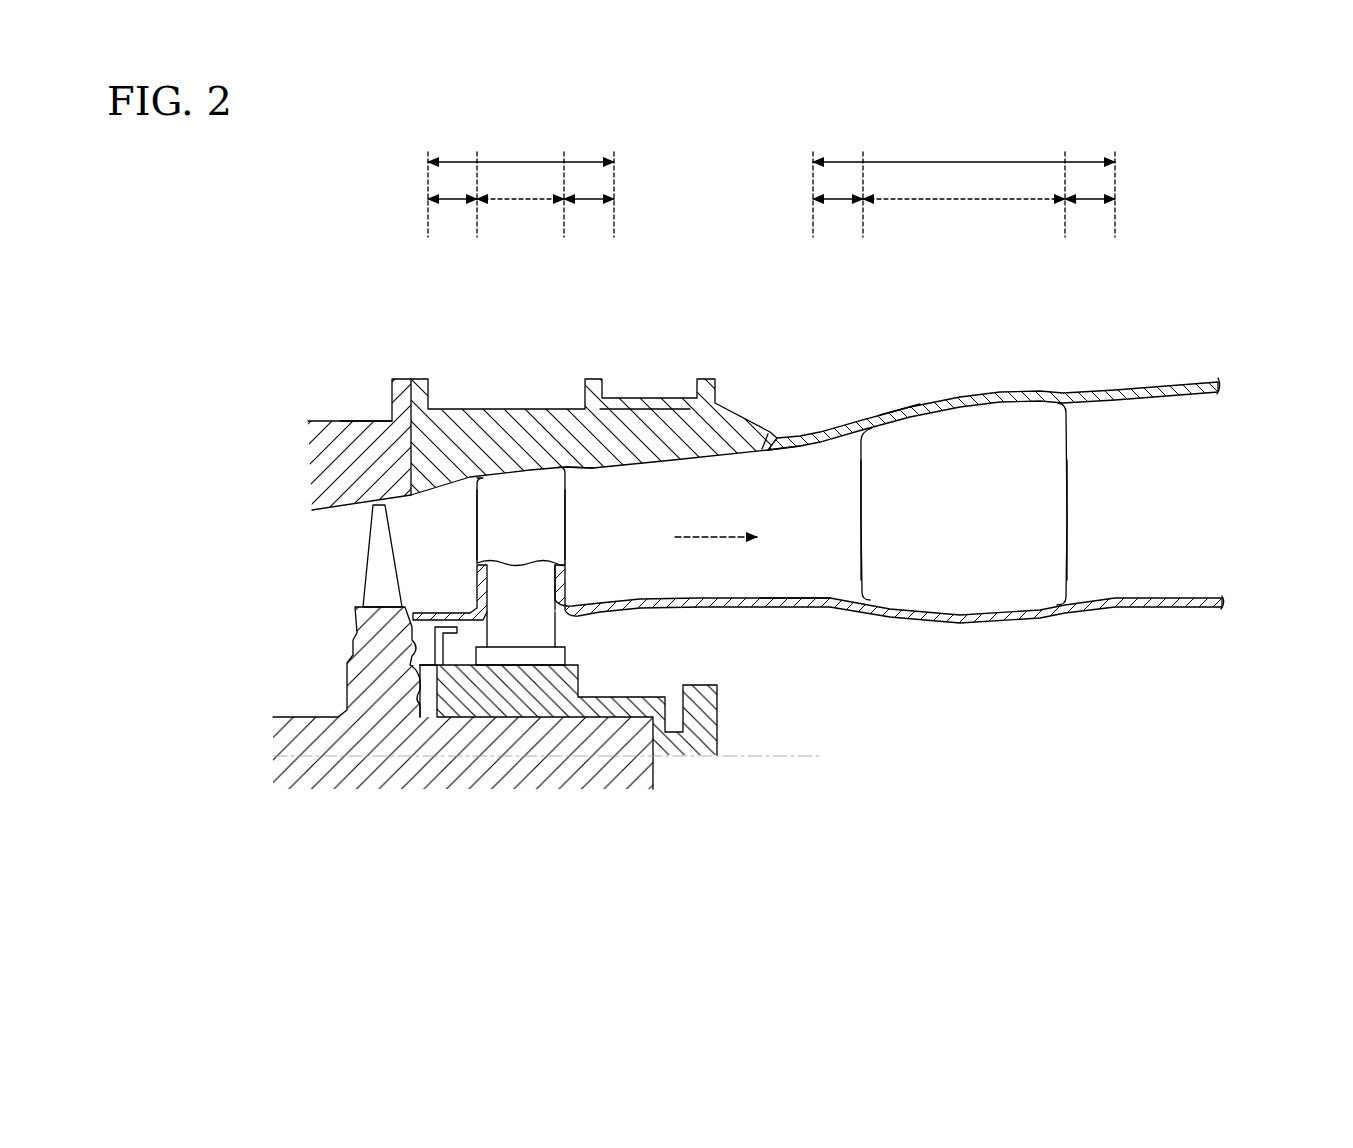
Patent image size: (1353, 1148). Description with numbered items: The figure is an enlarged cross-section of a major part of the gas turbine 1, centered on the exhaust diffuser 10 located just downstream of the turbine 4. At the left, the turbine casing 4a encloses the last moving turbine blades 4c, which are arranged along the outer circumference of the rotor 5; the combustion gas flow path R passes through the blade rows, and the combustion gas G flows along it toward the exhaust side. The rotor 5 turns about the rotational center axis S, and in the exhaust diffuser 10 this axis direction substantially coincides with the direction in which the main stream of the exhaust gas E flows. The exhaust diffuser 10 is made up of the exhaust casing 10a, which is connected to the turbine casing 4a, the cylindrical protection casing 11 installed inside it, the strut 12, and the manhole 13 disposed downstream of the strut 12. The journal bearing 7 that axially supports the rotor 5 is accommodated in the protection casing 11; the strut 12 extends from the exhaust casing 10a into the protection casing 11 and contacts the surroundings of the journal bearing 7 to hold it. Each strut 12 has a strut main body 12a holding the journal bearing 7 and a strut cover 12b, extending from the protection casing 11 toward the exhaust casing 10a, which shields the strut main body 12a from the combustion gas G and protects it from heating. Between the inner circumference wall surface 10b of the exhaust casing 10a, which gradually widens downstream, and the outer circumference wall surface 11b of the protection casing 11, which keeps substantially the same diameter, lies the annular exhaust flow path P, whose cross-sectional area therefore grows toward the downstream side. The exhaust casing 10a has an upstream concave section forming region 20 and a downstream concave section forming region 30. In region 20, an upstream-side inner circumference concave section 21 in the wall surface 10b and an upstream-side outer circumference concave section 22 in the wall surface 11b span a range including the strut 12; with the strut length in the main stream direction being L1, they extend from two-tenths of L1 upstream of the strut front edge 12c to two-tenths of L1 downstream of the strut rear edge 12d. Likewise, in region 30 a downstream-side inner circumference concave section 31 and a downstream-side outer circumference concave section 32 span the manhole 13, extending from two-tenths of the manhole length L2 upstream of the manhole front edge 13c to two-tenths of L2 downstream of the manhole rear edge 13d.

The gas turbine 1 is at (1252, 210).
The turbine 4 is at (320, 405).
The turbine casing 4a is at (362, 424).
The moving turbine blades 4c is at (372, 575).
The rotor 5 is at (300, 708).
The journal bearing 7 is at (535, 698).
The exhaust diffuser 10 is at (1042, 389).
The exhaust casing 10a is at (923, 406).
The inner circumference wall surface 10b is at (787, 449).
The protection casing 11 is at (1175, 597).
The outer circumference wall surface 11b is at (790, 598).
The strut 12 is at (520, 535).
The strut main body 12a is at (543, 630).
The strut cover 12b is at (548, 545).
The strut front edge 12c is at (477, 528).
The strut rear edge 12d is at (565, 560).
The manhole 13 is at (985, 448).
The manhole front edge 13c is at (861, 526).
The manhole rear edge 13d is at (1068, 505).
The upstream concave section forming region 20 is at (518, 162).
The upstream-side inner circumference concave section 21 is at (578, 473).
The upstream-side outer circumference concave section 22 is at (592, 597).
The downstream concave section forming region 30 is at (968, 162).
The downstream-side inner circumference concave section 31 is at (1078, 413).
The downstream-side outer circumference concave section 32 is at (1090, 584).
The length of the strut in the main stream direction L1 is at (522, 199).
The length of the manhole in the main stream direction L2 is at (965, 199).
The exhaust flow path P is at (665, 456).
The combustion gas flow path R is at (315, 525).
The combustion gas G is at (338, 556).
The exhaust gas E is at (720, 538).
The rotational center axis S is at (395, 752).